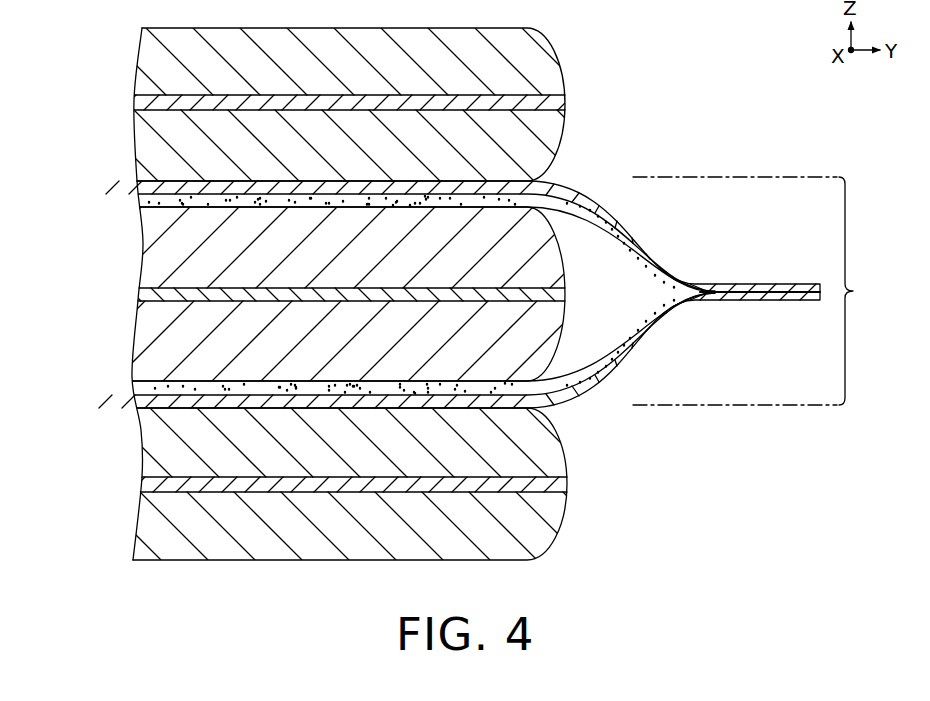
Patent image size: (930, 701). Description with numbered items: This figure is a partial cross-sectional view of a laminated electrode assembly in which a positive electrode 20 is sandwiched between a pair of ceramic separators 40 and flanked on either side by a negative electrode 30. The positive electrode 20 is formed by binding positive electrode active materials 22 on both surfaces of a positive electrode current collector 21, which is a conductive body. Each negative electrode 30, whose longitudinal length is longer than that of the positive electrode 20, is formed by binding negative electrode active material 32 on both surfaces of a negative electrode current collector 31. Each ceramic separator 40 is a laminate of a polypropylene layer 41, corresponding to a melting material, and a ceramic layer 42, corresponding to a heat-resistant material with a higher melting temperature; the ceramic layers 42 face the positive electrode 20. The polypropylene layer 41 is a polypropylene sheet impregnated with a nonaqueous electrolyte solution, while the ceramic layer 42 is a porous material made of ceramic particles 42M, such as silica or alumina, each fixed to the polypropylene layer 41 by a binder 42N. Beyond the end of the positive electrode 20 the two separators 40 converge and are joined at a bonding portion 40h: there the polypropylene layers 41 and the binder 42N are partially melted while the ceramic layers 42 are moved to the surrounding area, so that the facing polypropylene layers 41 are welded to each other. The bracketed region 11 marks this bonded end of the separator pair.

The joined portion of separators 11 is at (760, 291).
The positive electrode 20 is at (113, 202).
The positive electrode current collector 21 is at (150, 295).
The negative electrode active material layer 22 is at (155, 247).
The negative electrode 30 is at (627, 50).
The negative electrode current collector 31 is at (550, 102).
The negative electrode active material 32 is at (550, 63).
The ceramic separator 40 is at (717, 228).
The bonding portion 40h is at (753, 283).
The polypropylene layer 41 is at (652, 250).
The ceramic layer 42 is at (424, 294).
The ceramic particles 42M is at (598, 226).
The binder 42N is at (630, 258).